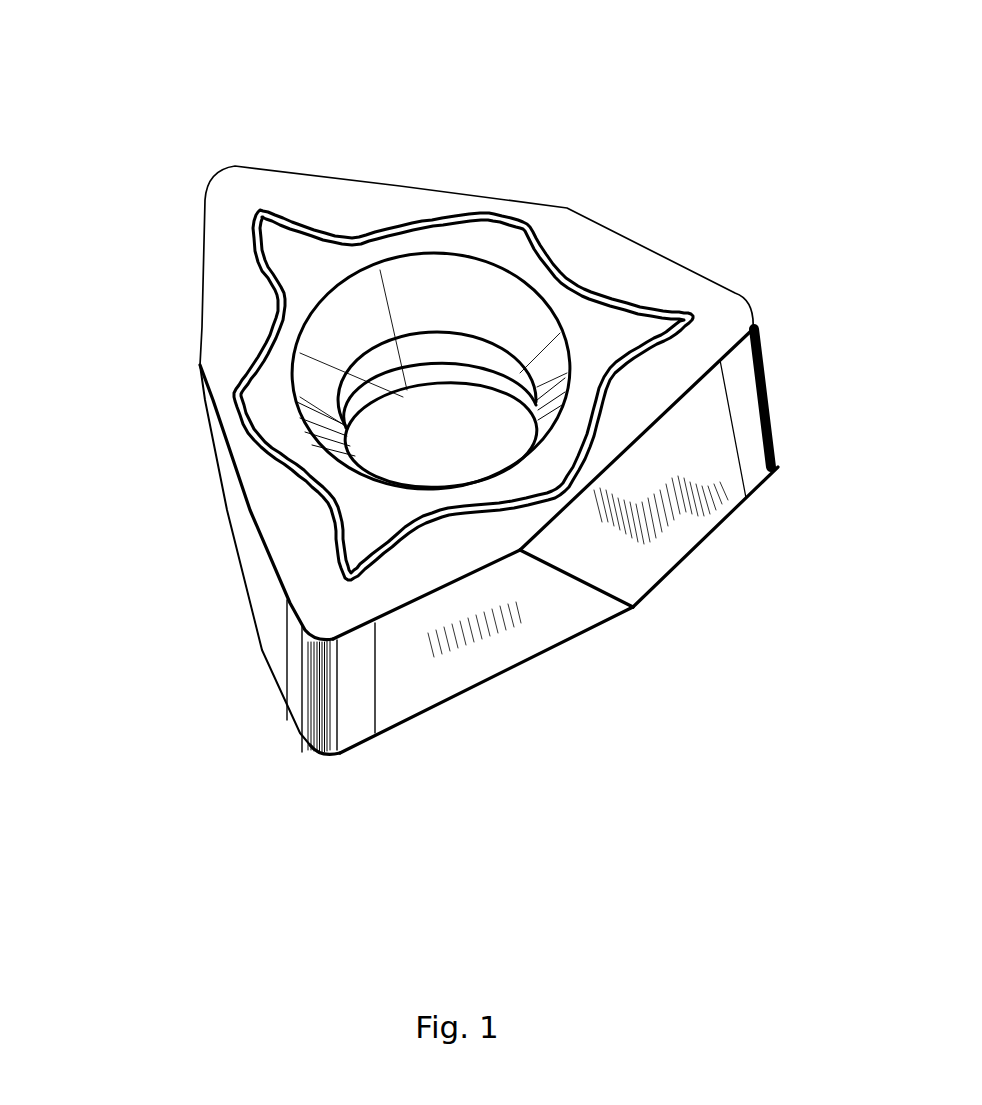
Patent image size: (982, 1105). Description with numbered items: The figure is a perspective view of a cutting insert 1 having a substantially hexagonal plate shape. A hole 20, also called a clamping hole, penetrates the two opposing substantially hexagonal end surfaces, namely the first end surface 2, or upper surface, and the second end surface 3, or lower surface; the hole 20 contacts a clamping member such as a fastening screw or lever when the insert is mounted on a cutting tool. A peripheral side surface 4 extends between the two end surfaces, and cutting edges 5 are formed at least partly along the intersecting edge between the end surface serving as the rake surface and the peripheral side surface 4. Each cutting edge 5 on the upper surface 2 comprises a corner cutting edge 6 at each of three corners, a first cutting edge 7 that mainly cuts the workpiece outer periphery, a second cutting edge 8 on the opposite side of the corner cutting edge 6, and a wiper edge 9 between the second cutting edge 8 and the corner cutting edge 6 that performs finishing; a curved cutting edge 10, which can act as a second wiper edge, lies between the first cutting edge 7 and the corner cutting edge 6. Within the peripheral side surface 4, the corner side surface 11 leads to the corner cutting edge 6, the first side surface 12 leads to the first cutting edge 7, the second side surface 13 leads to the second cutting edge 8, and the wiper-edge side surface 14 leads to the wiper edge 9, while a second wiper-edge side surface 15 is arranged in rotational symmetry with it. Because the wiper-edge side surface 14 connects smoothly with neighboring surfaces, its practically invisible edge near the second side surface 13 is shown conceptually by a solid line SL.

The cutting insert 1 is at (600, 317).
The first end surface 2 is at (462, 237).
The second end surface 3 is at (670, 570).
The peripheral side surface 4 is at (673, 522).
The cutting edges 5 is at (420, 593).
The corner cutting edge 6 is at (300, 690).
The first cutting edge 7 is at (440, 583).
The second cutting edge 8 is at (245, 548).
The wiper edge 9 is at (298, 613).
The curved cutting edge 10 is at (377, 695).
The corner side surface 11 is at (313, 750).
The first side surface 12 is at (503, 630).
The second side surface 13 is at (243, 523).
The wiper-edge side surface 14 is at (298, 651).
The second wiper-edge side surface 15 is at (357, 723).
The hole 20 is at (447, 437).
The solid line edge of wiper-edge side surface SL is at (301, 650).